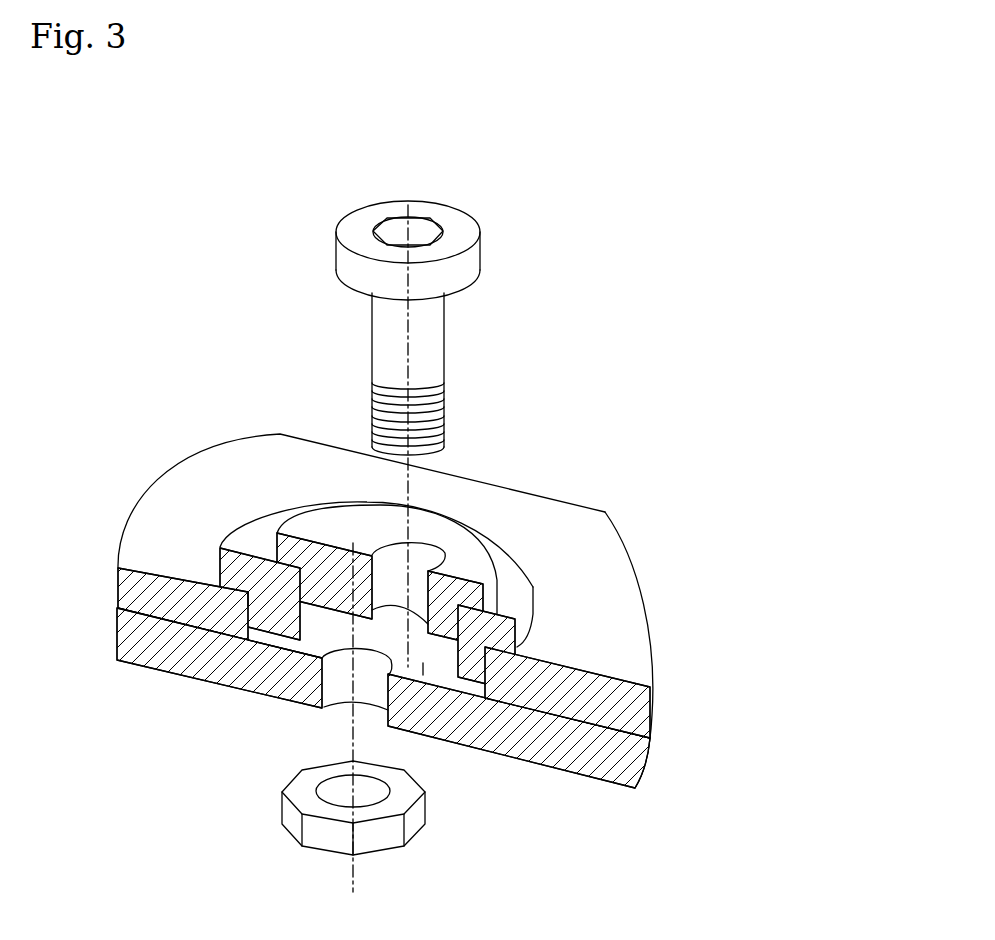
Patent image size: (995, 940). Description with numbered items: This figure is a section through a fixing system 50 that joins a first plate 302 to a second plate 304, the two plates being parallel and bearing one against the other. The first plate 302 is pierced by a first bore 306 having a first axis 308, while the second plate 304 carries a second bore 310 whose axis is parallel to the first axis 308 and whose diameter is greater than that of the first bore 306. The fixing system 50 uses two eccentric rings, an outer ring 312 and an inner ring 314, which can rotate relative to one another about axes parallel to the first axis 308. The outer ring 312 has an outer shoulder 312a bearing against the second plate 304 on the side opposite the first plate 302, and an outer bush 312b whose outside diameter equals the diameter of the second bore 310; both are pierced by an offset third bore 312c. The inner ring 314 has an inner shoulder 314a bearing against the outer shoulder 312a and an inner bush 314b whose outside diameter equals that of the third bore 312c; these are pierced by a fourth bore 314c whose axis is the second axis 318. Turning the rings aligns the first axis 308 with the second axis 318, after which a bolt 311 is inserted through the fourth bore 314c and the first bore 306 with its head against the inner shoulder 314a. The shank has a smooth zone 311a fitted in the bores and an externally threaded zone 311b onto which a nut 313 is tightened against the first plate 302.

The fixing system 50 is at (612, 278).
The first plate 302 is at (625, 757).
The second plate 304 is at (625, 707).
The first bore 306 is at (340, 690).
The first axis 308 is at (353, 870).
The second bore 310 is at (258, 676).
The bolt 311 is at (457, 265).
The smooth zone 311a is at (433, 342).
The externally threaded zone 311b is at (372, 408).
The outer ring 312 is at (673, 563).
The outer shoulder 312a is at (257, 547).
The outer bush 312b is at (272, 606).
The third bore 312c is at (423, 663).
The nut 313 is at (408, 832).
The inner ring 314 is at (582, 468).
The inner shoulder 314a is at (302, 537).
The inner bush 314b is at (483, 590).
The fourth bore 314c is at (425, 553).
The second axis 318 is at (407, 230).